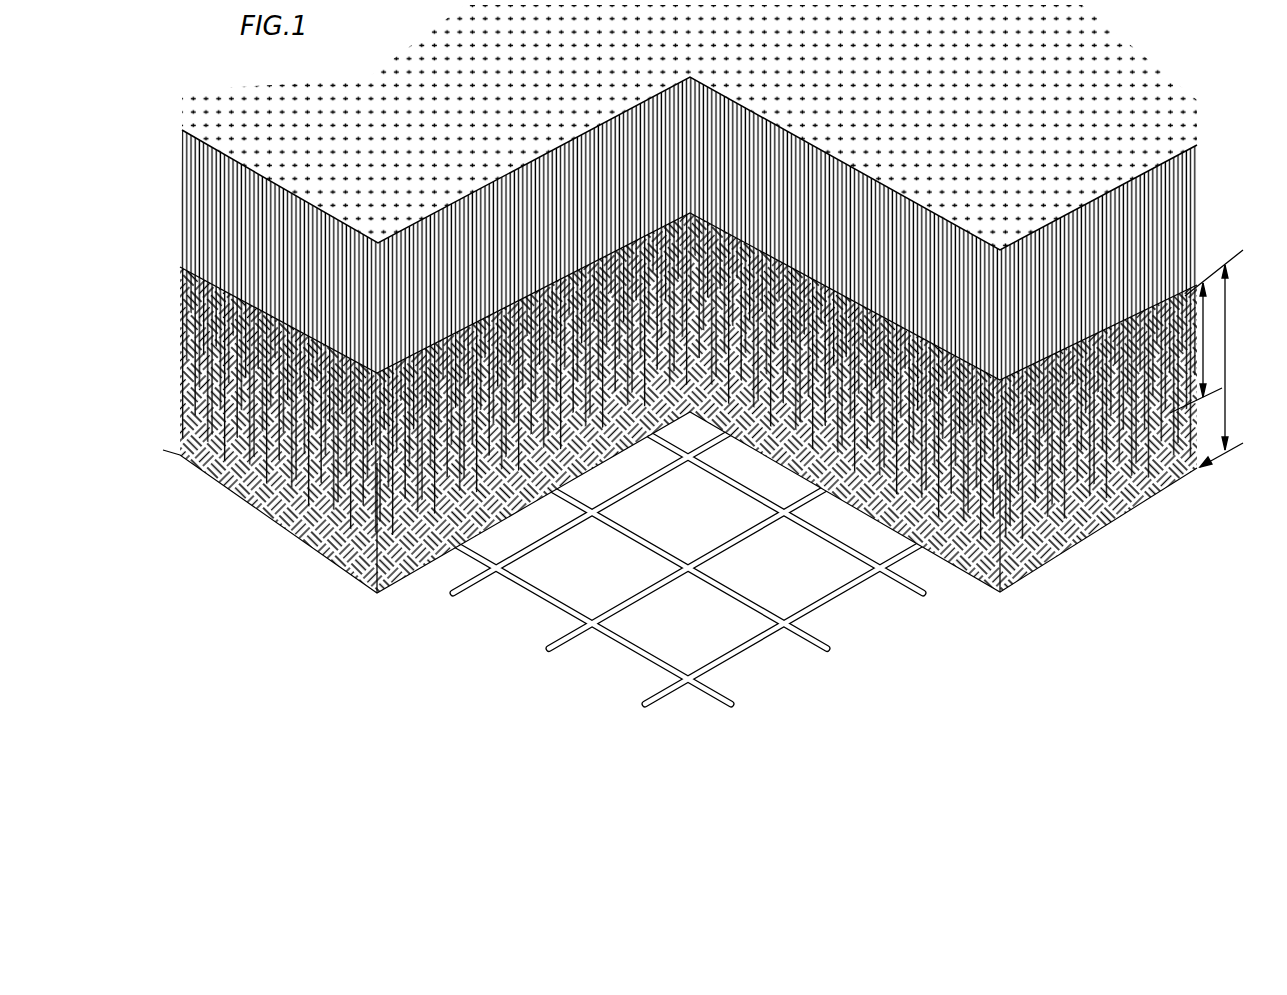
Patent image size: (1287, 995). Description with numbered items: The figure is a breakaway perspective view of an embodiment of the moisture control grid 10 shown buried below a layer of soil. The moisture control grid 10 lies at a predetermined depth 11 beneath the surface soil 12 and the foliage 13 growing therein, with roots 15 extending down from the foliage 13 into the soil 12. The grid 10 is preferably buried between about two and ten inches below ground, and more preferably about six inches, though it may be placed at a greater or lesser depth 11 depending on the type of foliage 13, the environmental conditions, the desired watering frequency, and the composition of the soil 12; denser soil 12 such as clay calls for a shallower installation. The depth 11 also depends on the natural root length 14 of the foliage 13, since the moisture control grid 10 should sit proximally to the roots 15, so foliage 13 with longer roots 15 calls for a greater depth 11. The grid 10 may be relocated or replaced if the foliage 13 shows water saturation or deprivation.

The moisture control grid 10 is at (856, 672).
The predetermined depth 11 is at (1227, 384).
The surface soil 12 is at (212, 425).
The foliage 13 is at (1178, 227).
The natural root length 14 is at (1205, 322).
The roots 15 is at (193, 372).